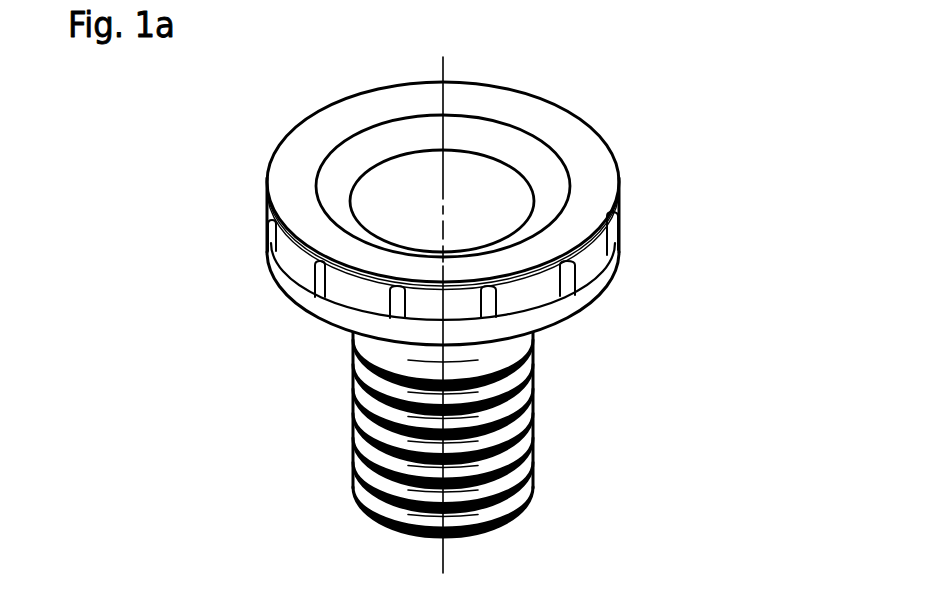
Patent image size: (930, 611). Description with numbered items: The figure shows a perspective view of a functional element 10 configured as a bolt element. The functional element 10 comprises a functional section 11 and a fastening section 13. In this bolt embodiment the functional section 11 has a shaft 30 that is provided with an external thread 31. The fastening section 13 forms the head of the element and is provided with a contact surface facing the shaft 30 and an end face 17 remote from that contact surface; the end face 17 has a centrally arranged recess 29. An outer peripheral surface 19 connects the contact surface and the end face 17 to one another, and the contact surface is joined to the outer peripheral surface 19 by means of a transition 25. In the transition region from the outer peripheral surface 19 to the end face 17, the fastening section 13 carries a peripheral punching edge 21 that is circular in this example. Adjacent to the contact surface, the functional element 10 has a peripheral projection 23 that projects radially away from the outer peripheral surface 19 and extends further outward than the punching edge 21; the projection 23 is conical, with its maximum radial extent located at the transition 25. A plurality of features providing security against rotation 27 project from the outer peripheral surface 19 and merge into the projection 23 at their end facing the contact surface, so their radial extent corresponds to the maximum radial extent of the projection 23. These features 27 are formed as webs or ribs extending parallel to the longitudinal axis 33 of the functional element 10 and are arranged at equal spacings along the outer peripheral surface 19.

The functional element 10 is at (686, 102).
The functional section 11 is at (414, 428).
The fastening section 13 is at (460, 216).
The end face 17 is at (497, 99).
The outer peripheral surface 19 is at (290, 262).
The punching edge 21 is at (263, 222).
The projection 23 is at (595, 284).
The transition 25 is at (549, 336).
The features providing security against rotation 27 is at (488, 310).
The recess 29 is at (405, 200).
The shaft 30 is at (382, 478).
The external thread 31 is at (525, 447).
The longitudinal axis 33 is at (447, 68).